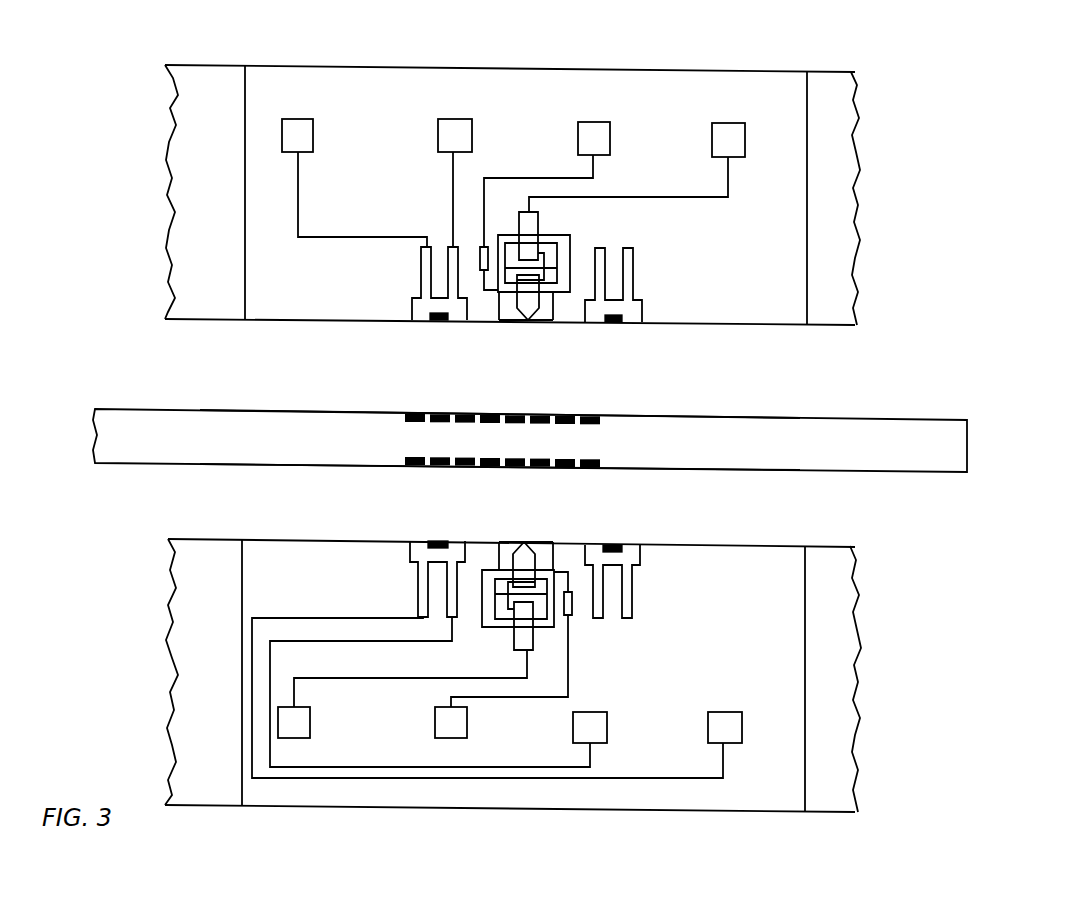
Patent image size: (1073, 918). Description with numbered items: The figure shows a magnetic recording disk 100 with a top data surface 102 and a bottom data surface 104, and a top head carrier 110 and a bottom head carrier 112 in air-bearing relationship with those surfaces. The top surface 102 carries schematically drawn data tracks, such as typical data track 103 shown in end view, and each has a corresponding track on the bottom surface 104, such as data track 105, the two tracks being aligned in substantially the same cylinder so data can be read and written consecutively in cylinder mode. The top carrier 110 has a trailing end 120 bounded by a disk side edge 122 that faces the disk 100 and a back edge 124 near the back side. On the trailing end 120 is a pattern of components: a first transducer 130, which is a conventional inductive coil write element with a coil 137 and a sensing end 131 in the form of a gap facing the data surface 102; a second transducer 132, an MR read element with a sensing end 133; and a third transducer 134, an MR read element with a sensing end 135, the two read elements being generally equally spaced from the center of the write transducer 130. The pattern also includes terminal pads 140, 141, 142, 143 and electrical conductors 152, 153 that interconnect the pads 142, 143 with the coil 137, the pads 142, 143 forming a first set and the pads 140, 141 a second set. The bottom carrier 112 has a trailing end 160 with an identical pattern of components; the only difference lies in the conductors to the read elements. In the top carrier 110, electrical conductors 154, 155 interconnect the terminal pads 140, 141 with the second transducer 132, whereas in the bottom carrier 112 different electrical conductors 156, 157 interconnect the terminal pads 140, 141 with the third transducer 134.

The magnetic recording disk 100 is at (937, 440).
The top data surface 102 is at (883, 417).
The data track 103 is at (440, 413).
The bottom data surface 104 is at (858, 478).
The data track 105 is at (433, 467).
The top head carrier 110 is at (836, 226).
The bottom head carrier 112 is at (833, 660).
The trailing end 120 is at (786, 157).
The disk side edge 122 is at (258, 322).
The back edge 124 is at (287, 66).
The first transducer 130 is at (542, 316).
The sensing end 131 is at (527, 321).
The second transducer 132 is at (421, 320).
The sensing end 133 is at (442, 322).
The third transducer 134 is at (633, 322).
The sensing end 135 is at (610, 322).
The coil 137 is at (688, 197).
The terminal pad 140 is at (306, 135).
The terminal pad 141 is at (466, 136).
The terminal pad 142 is at (604, 136).
The terminal pad 143 is at (742, 136).
The electrical conductor 152 is at (520, 178).
The electrical conductor 153 is at (570, 235).
The electrical conductor 154 is at (337, 236).
The electrical conductor 155 is at (447, 184).
The electrical conductor 156 is at (268, 717).
The electrical conductor 157 is at (252, 658).
The trailing end 160 is at (787, 727).